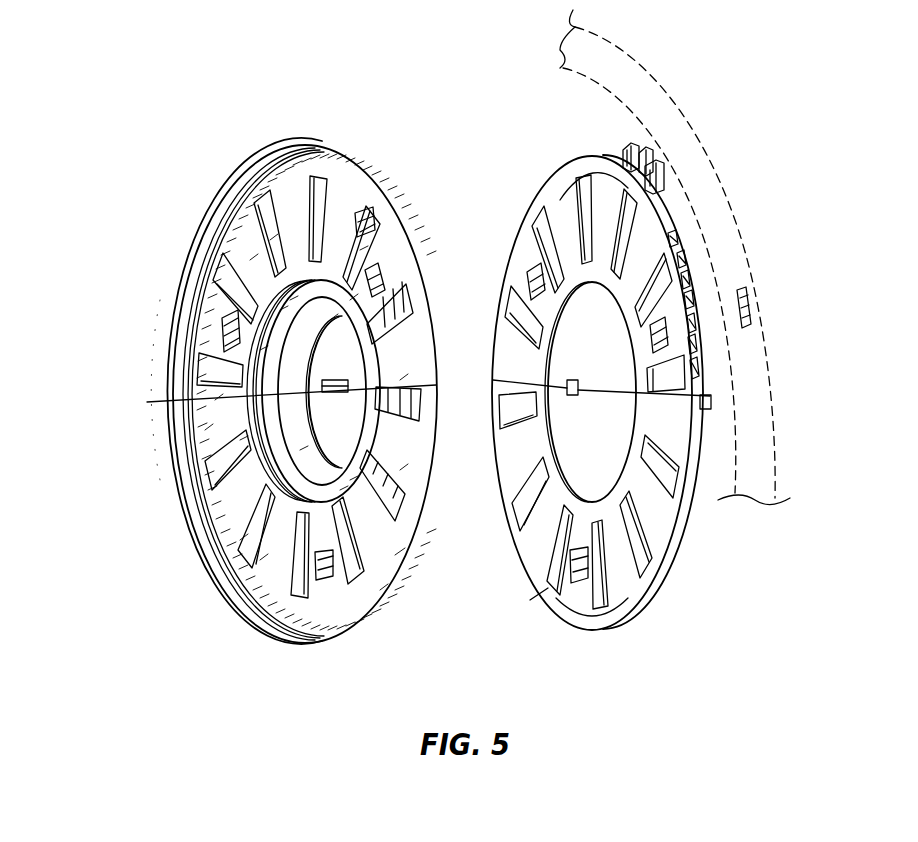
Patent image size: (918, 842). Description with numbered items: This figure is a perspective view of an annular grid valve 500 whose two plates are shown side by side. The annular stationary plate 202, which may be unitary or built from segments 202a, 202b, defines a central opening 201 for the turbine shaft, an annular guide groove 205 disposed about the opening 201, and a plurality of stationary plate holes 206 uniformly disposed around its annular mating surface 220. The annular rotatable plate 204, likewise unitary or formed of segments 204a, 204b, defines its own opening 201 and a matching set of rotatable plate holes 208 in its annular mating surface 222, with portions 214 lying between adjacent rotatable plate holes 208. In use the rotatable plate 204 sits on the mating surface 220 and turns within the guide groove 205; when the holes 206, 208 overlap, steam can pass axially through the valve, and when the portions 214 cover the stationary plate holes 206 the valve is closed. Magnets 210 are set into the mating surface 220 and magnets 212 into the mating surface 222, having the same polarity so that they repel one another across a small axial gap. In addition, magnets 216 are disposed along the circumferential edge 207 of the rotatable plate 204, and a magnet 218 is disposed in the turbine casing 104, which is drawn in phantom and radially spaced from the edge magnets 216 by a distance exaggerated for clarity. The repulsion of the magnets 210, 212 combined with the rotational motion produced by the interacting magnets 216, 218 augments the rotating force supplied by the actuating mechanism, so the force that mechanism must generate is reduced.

The annular grid valve 500 is at (128, 118).
The annular stationary plate 202 is at (283, 136).
The segment of the annular stationary plate 202a is at (193, 205).
The segment of the annular stationary plate 202b is at (172, 510).
The annular guide groove 205 is at (262, 406).
The opening 201 is at (302, 403).
The stationary plate holes 206 is at (318, 185).
The magnets 210 is at (380, 284).
The annular mating surface 220 is at (372, 548).
The annular rotatable plate 204 is at (680, 538).
The segment of the annular rotatable plate 204a is at (585, 175).
The segment of the annular rotatable plate 204b is at (594, 632).
The circumferential edge 207 is at (688, 487).
The rotatable plate holes 208 is at (657, 460).
The magnets 212 is at (530, 275).
The portions of the annular rotatable plate 214 is at (607, 175).
The magnets 216 is at (698, 283).
The annular mating surface 222 is at (545, 590).
The casing 104 is at (755, 247).
The magnets 218 is at (752, 307).